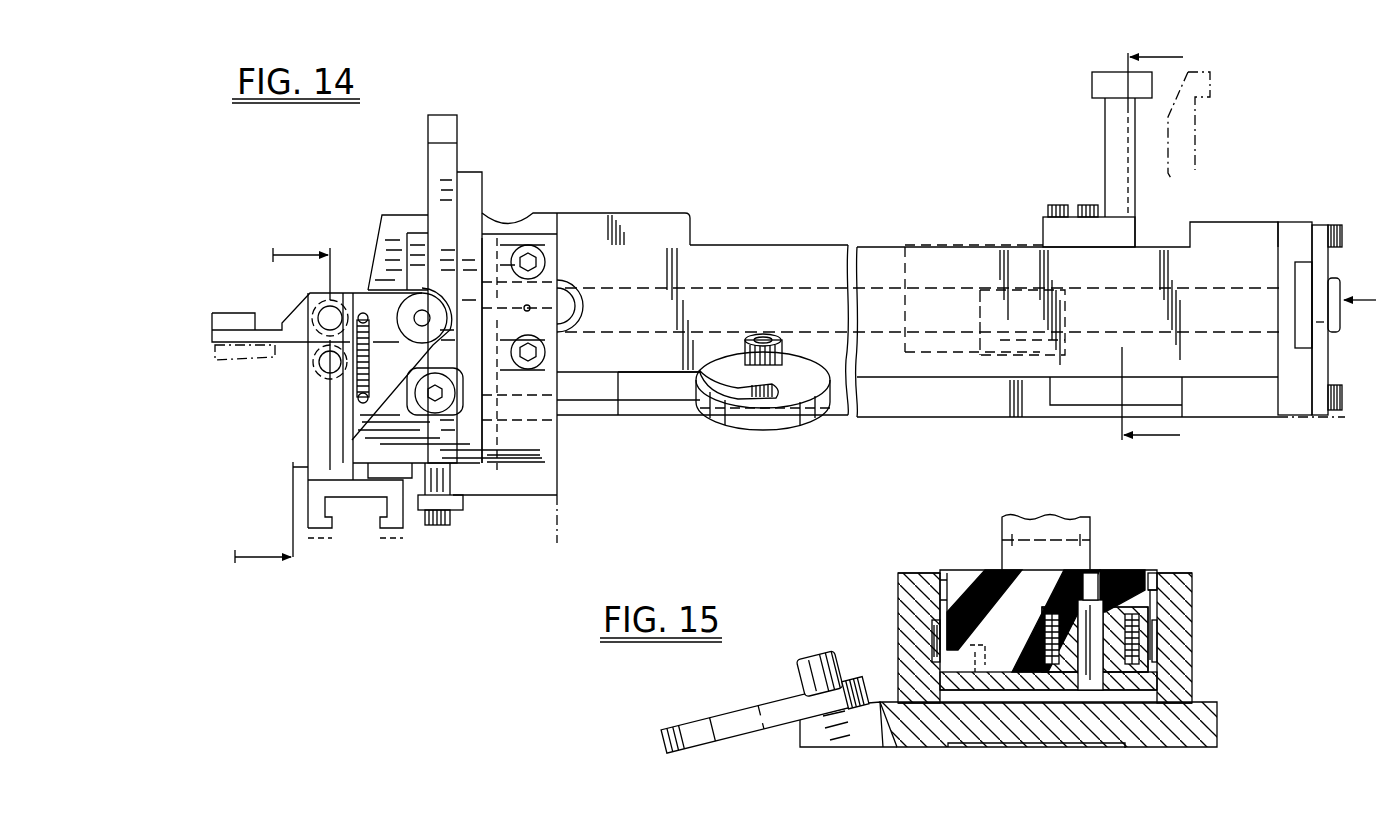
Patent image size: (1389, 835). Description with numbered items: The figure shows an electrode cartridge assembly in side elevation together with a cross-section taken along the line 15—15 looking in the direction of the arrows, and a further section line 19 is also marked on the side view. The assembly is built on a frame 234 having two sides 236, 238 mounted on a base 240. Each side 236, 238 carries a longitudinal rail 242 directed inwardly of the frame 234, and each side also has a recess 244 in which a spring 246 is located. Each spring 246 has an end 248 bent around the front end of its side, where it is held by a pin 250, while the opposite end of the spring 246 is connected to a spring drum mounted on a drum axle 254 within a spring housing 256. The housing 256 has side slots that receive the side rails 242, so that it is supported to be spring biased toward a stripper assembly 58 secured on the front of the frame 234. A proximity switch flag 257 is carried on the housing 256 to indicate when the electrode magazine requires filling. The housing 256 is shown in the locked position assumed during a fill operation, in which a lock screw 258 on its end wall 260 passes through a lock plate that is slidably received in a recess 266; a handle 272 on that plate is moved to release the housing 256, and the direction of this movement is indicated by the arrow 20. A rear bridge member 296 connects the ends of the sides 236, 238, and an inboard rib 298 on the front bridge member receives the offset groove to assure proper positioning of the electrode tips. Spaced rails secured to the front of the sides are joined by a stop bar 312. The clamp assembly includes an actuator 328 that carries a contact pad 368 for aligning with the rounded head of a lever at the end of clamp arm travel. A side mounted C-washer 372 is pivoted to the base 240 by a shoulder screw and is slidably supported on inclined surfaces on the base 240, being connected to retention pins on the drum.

In FIG. 14, the contact pad 368 is at (230, 312).
In FIG. 14, the actuator 328 is at (214, 344).
In FIG. 14, the stripper assembly 58 is at (358, 532).
In FIG. 14, the stop bar 312 is at (458, 503).
In FIG. 14, the pin 250 is at (526, 305).
In FIG. 14, the end 248 is at (580, 307).
In FIG. 14, the inboard rib 298 is at (592, 220).
In FIG. 14, the side 236 is at (776, 257).
In FIG. 15, the side 236 is at (899, 596).
In FIG. 14, the base 240 is at (678, 405).
In FIG. 15, the base 240 is at (1000, 748).
In FIG. 14, the C-washer 372 is at (808, 422).
In FIG. 14, the proximity switch flag 257 is at (1098, 88).
In FIG. 14, the bridge member 296 is at (1232, 224).
In FIG. 14, the recess 266 is at (1298, 300).
In FIG. 14, the handle 272 is at (1338, 316).
In FIG. 14, the direction arrow 20 is at (1365, 300).
In FIG. 14, the section line 19- 19 is at (282, 407).
In FIG. 14, the section line 15- 15 is at (1168, 247).
In FIG. 15, the side 238 is at (1190, 617).
In FIG. 15, the electrode carriage frame 234 is at (1198, 598).
In FIG. 15, the lock screw 258 is at (920, 572).
In FIG. 15, the longitudinal rail 242 is at (1153, 585).
In FIG. 15, the end wall 260 is at (1157, 590).
In FIG. 15, the spring housing 256 is at (962, 663).
In FIG. 15, the recess 244 is at (932, 655).
In FIG. 15, the spring 246 is at (933, 632).
In FIG. 15, the drum axle 254 is at (1076, 612).